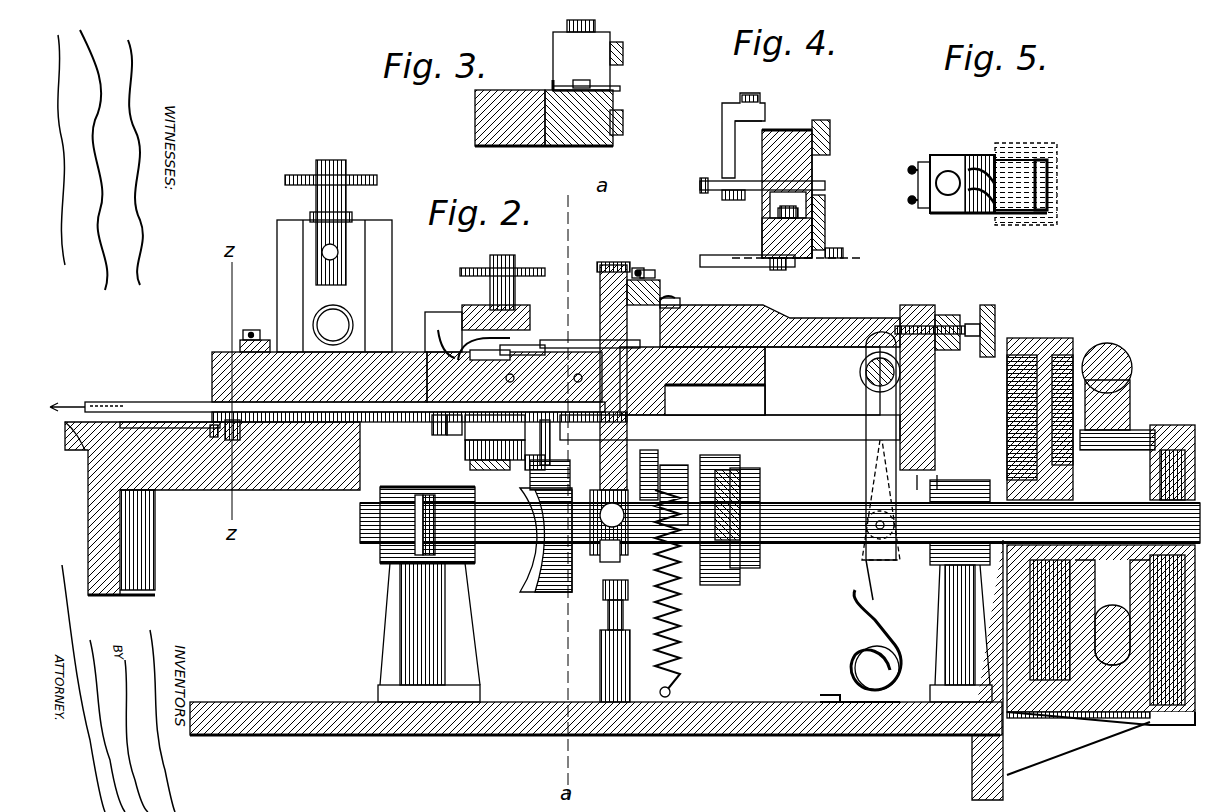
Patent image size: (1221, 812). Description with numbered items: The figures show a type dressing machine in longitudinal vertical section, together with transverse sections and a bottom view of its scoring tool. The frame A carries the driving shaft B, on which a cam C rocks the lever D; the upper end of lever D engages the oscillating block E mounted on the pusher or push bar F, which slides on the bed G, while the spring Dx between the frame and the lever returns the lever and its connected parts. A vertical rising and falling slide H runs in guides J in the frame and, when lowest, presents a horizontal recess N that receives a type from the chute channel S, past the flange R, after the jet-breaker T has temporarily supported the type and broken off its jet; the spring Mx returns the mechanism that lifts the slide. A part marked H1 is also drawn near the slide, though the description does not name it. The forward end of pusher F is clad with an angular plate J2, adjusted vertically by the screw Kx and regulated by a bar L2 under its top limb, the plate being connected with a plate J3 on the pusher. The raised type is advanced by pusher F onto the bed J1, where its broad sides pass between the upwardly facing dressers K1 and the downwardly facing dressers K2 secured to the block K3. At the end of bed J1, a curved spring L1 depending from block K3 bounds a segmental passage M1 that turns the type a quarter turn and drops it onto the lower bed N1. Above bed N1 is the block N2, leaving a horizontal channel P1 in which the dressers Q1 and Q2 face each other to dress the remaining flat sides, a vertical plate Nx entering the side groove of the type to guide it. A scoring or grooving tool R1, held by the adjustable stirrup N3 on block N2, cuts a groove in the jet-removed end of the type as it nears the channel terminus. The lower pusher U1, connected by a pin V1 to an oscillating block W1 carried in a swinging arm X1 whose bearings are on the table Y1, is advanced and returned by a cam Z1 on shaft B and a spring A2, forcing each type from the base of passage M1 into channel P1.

In FIG. 2, the frame A is at (534, 611).
In FIG. 2, the driving shaft B is at (795, 508).
In FIG. 2, the cam C is at (865, 555).
In FIG. 2, the lever D is at (877, 432).
In FIG. 2, the spring Dx is at (860, 605).
In FIG. 2, the oscillating block E is at (862, 374).
In FIG. 2, the pusher or push bar F is at (805, 325).
In FIG. 2, the bed G is at (692, 382).
In FIG. 2, the vertical rising and falling slide H is at (585, 350).
In FIG. 2, the carriage plate H1 is at (531, 367).
In FIG. 2, the guides J is at (730, 428).
In FIG. 3, the bed J1 is at (592, 145).
In FIG. 2, the bed J1 is at (565, 345).
In FIG. 3, the angular plate J2 is at (560, 52).
In FIG. 2, the angular plate J2 is at (640, 266).
In FIG. 2, the plate J3 is at (680, 305).
In FIG. 3, the dressers K1 is at (613, 100).
In FIG. 3, the dressers K2 is at (612, 72).
In FIG. 2, the block K3 is at (525, 318).
In FIG. 2, the screw Kx is at (650, 270).
In FIG. 2, the curved spring L1 is at (444, 340).
In FIG. 2, the bar L2 is at (670, 298).
In FIG. 2, the passage M1 is at (462, 360).
In FIG. 2, the spring Mx is at (680, 608).
In FIG. 2, the horizontal recess N is at (625, 250).
In FIG. 4, the bed N1 is at (768, 244).
In FIG. 4, the block N2 is at (780, 145).
In FIG. 2, the block N2 is at (285, 500).
In FIG. 4, the stirrup N3 is at (725, 135).
In FIG. 5, the stirrup N3 is at (1045, 162).
In FIG. 2, the stirrup N3 is at (268, 345).
In FIG. 4, the vertical plate Nx is at (788, 215).
In FIG. 2, the horizontal channel P1 is at (210, 402).
In FIG. 4, the dresser Q1 is at (816, 168).
In FIG. 4, the dresser Q2 is at (820, 215).
In FIG. 4, the flange R is at (760, 190).
In FIG. 2, the flange R is at (747, 241).
In FIG. 5, the scoring or grooving tool R1 is at (982, 170).
In FIG. 2, the scoring or grooving tool R1 is at (215, 470).
In FIG. 2, the pusher U1 is at (495, 429).
In FIG. 2, the pin V1 is at (548, 432).
In FIG. 2, the oscillating block W1 is at (530, 462).
In FIG. 2, the swinging arm X1 is at (478, 465).
In FIG. 2, the table Y1 is at (786, 430).
In FIG. 2, the cam Z1 is at (553, 580).
In FIG. 2, the roller k is at (607, 535).
In FIG. 2, the spring A2 is at (495, 440).
In FIG. 2, the channel S is at (452, 435).
In FIG. 2, the jet-breaker T is at (436, 435).